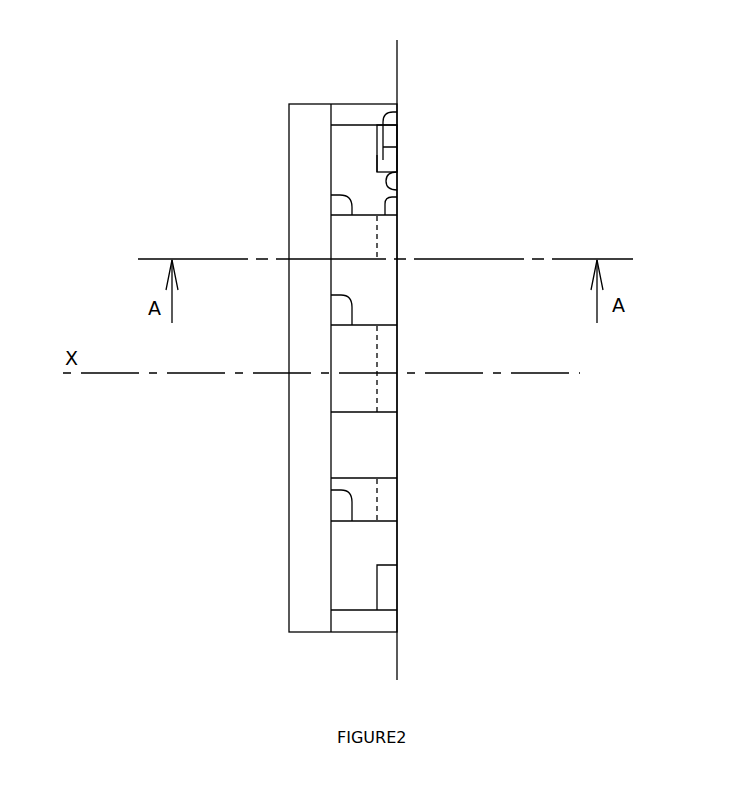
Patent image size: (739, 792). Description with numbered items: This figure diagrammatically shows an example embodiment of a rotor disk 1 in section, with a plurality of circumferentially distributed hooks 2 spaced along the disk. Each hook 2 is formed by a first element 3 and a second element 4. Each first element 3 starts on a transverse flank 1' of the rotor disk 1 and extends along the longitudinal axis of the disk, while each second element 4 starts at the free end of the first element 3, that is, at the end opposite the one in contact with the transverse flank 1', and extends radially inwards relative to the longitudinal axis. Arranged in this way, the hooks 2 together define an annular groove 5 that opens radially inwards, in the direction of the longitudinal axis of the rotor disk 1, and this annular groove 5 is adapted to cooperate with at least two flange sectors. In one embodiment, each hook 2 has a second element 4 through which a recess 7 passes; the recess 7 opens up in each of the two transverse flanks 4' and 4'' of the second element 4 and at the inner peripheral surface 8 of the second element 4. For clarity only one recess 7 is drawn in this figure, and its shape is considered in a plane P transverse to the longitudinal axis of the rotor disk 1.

The rotor disk 1 is at (324, 324).
The transverse flank 1' is at (390, 368).
The hook 2 is at (343, 100).
The first element 3 is at (373, 103).
The second element 4 is at (437, 373).
The transverse flank of the second element 4' is at (424, 151).
The transverse flank of the second element 4'' is at (302, 180).
The annular groove 5 is at (360, 148).
The recess 7 is at (400, 114).
The inner peripheral surface 8 is at (400, 188).
The plane P is at (400, 657).